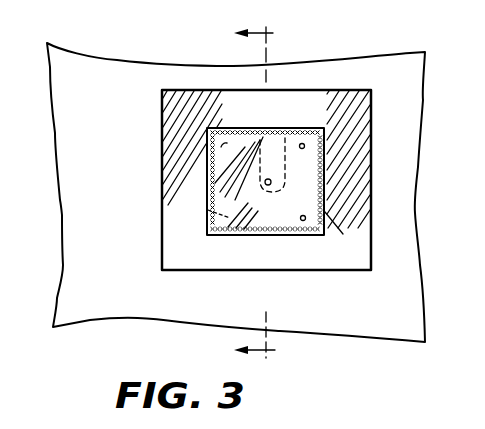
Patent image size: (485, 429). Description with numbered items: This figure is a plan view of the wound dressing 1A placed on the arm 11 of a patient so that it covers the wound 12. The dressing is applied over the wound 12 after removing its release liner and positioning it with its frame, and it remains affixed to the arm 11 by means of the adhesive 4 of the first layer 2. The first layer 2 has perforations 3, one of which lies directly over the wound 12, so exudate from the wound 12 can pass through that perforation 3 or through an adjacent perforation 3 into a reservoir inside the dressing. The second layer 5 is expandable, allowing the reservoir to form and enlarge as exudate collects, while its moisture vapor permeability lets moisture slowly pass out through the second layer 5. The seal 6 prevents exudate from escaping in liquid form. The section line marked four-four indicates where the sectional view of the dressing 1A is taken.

The wound dressing 1A is at (157, 115).
The first layer 2 is at (166, 170).
The perforation 3 is at (208, 210).
The adhesive 4 is at (270, 192).
The second layer 5 is at (247, 218).
The seal 6 is at (310, 230).
The arm 11 is at (409, 62).
The wound 12 is at (263, 137).